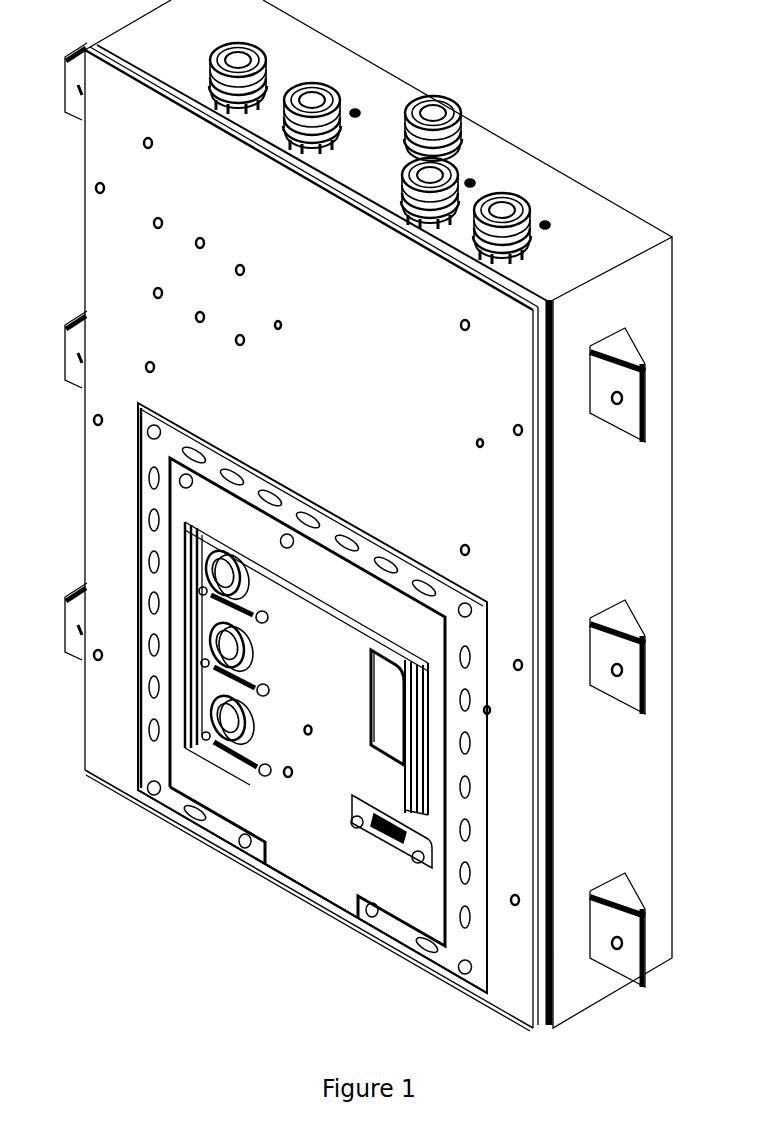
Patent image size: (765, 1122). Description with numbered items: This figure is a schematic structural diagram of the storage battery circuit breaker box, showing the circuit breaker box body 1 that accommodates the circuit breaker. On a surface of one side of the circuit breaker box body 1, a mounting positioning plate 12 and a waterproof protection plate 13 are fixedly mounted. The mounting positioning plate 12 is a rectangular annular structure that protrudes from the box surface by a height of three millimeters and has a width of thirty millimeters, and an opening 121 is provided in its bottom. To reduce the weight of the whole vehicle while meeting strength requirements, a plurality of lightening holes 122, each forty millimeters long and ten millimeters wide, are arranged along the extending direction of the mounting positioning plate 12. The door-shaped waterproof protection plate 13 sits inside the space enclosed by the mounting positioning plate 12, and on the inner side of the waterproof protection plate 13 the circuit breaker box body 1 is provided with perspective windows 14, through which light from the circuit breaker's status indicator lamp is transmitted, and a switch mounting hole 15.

The circuit breaker box body 1 is at (372, 95).
The mounting positioning plate 12 is at (287, 500).
The opening 121 is at (302, 875).
The lightening hole 122 is at (194, 814).
The waterproof protection plate 13 is at (337, 612).
The perspective window 14 is at (222, 647).
The switch mounting hole 15 is at (395, 742).